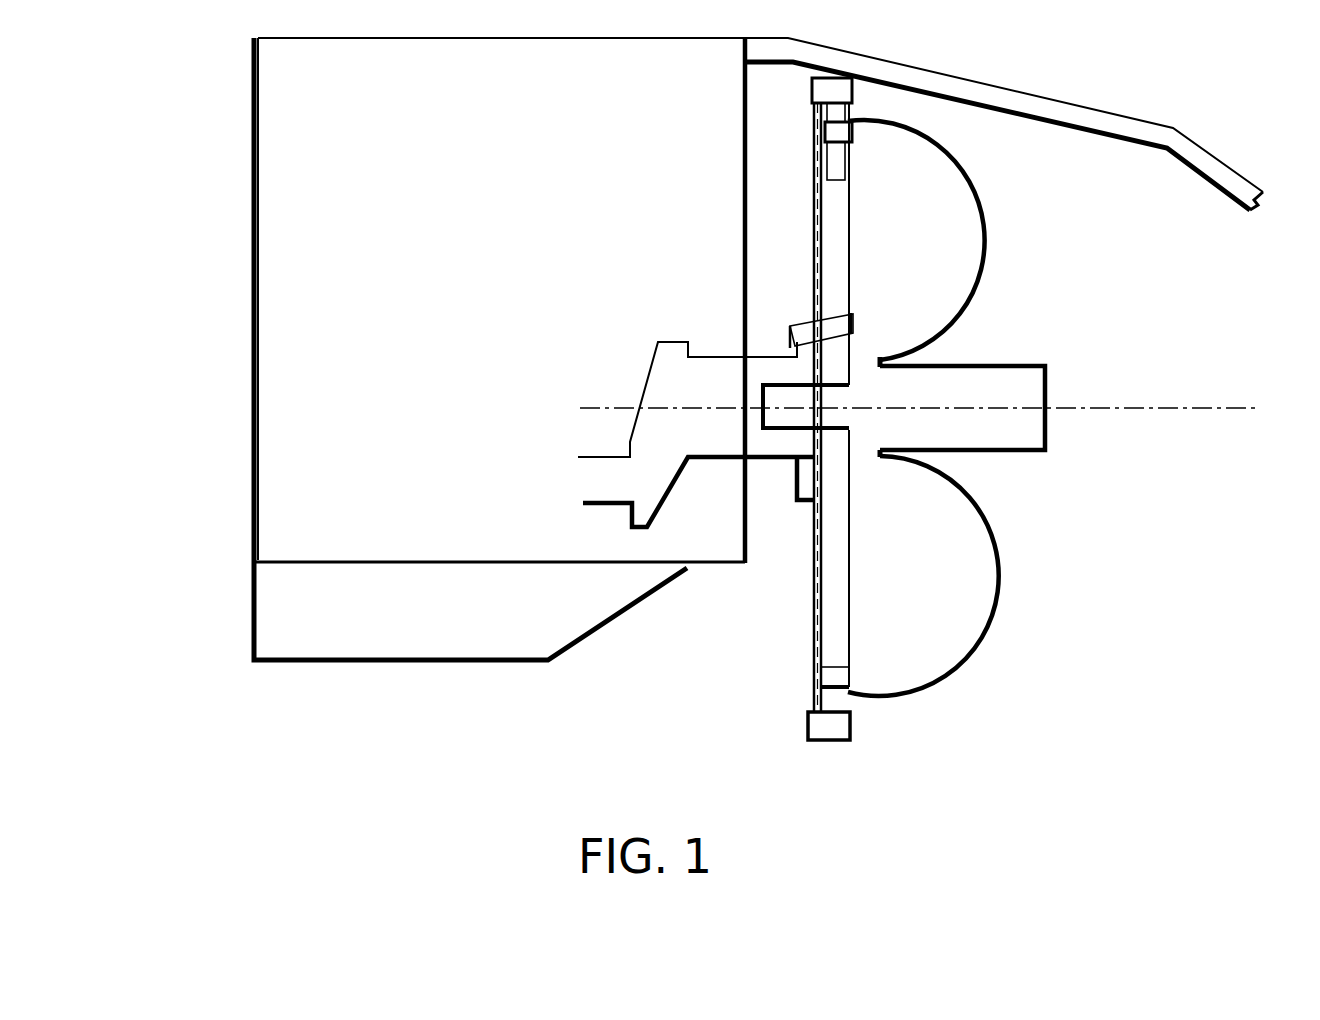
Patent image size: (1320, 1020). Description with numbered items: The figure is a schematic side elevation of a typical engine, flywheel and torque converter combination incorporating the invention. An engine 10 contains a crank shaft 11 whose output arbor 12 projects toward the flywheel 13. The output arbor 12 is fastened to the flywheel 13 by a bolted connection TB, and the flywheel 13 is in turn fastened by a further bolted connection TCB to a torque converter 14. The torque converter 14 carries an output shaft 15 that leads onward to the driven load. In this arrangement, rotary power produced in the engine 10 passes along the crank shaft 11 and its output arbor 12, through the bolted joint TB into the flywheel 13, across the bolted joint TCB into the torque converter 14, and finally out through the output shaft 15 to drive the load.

The engine 10 is at (213, 484).
The crank shaft 11 is at (655, 462).
The output arbor 12 is at (805, 485).
The flywheel 13 is at (835, 628).
The torque converter 14 is at (937, 617).
The output shaft 15 is at (1020, 425).
The torque converter bolting TCB is at (848, 129).
The flywheel bolting TB is at (843, 330).